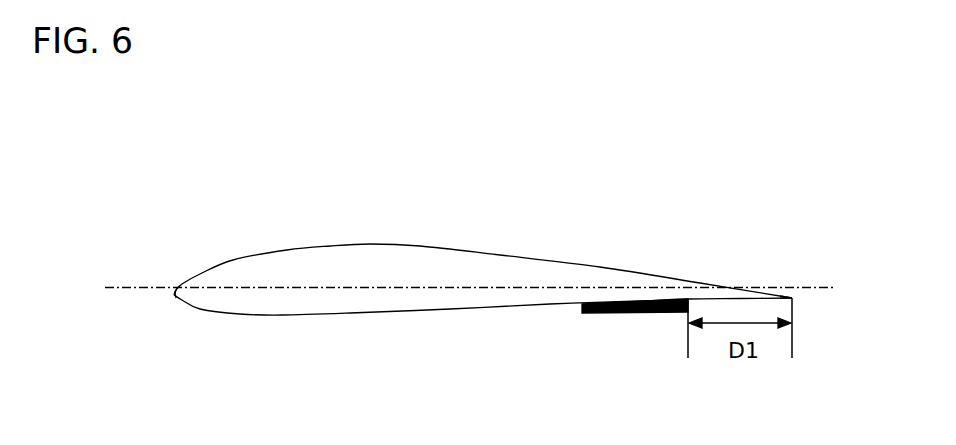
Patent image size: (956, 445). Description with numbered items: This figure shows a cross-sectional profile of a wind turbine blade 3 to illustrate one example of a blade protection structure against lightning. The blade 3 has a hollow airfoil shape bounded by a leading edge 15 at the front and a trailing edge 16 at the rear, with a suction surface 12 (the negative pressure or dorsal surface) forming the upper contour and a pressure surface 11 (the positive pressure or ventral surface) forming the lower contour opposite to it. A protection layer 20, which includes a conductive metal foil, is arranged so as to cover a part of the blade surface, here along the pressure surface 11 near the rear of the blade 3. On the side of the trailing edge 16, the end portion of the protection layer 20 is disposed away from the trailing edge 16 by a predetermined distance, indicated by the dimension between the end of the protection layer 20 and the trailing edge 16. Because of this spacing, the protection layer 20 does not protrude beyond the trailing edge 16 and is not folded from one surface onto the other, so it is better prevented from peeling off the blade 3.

The wind turbine blade 3 is at (483, 287).
The suction surface 12 is at (288, 249).
The pressure surface 11 is at (282, 316).
The leading edge 15 is at (168, 302).
The trailing edge 16 is at (792, 295).
The protection layer 20 is at (608, 313).